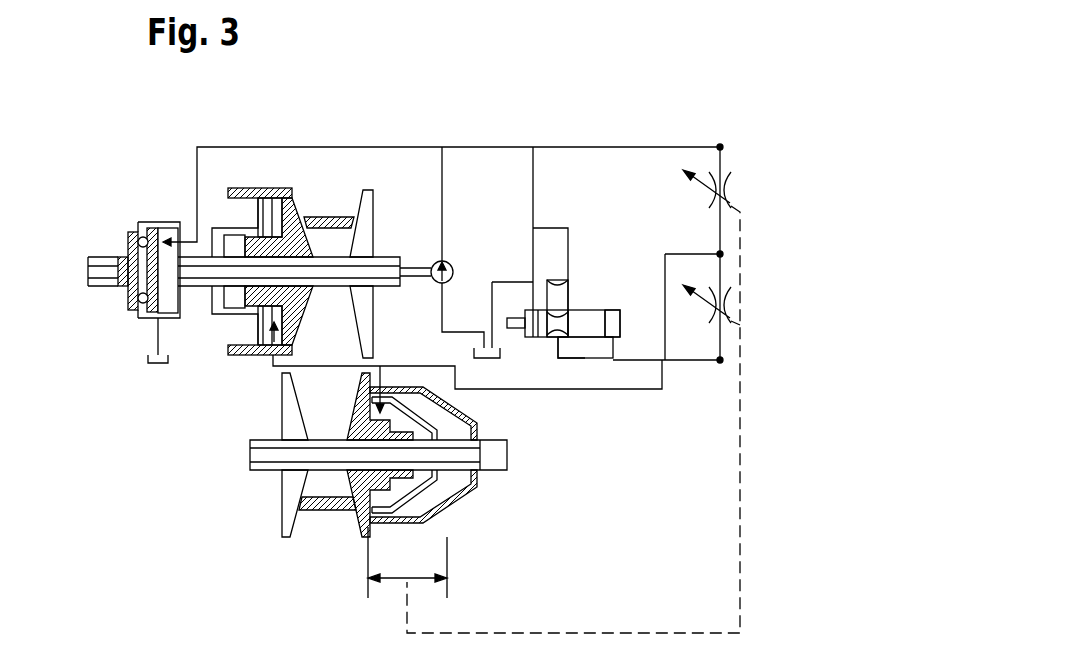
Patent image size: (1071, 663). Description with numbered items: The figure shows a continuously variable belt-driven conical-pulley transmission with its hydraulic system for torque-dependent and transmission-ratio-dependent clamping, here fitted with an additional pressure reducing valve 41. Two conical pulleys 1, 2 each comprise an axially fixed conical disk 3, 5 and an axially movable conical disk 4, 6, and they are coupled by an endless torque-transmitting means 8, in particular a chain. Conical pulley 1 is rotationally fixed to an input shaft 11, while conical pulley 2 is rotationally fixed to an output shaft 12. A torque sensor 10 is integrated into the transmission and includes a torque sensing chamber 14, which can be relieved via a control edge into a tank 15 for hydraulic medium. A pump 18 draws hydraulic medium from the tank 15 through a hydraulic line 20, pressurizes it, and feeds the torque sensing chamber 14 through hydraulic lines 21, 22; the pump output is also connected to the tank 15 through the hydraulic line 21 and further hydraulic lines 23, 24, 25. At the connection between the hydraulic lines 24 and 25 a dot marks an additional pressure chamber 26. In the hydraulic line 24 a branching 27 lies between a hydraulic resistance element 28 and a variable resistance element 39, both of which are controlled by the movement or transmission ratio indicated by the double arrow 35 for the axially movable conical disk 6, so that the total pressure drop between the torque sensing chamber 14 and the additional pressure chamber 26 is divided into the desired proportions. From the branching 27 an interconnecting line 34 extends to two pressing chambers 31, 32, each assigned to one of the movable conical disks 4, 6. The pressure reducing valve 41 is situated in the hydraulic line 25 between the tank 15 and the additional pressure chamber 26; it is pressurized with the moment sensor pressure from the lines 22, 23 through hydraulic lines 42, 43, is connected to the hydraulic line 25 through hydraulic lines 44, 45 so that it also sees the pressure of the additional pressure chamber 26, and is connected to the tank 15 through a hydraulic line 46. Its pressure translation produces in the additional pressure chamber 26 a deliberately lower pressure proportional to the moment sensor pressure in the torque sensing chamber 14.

The conical pulley 1 is at (318, 272).
The conical pulley 2 is at (365, 484).
The axially fixed conical disk 3 is at (368, 212).
The axially movable conical disk 4 is at (296, 198).
The axially fixed conical disk 5 is at (285, 492).
The axially movable conical disk 6 is at (355, 511).
The endless torque-transmitting means 8 is at (323, 511).
The torque sensor 10 is at (160, 252).
The input shaft 11 is at (110, 286).
The output shaft 12 is at (497, 470).
The torque sensing chamber 14 is at (164, 302).
The tank 15 is at (153, 365).
The pump 18 is at (432, 287).
The hydraulic line 20 is at (442, 322).
The hydraulic line 21 is at (443, 192).
The hydraulic line 22 is at (328, 147).
The hydraulic line 23 is at (595, 147).
The hydraulic line 24 is at (720, 228).
The hydraulic line 25 is at (688, 362).
The additional pressure chamber 26 is at (722, 360).
The branching 27 is at (722, 254).
The hydraulic resistance element 28 is at (733, 183).
The pressing chamber 31 is at (232, 298).
The pressing chamber 32 is at (377, 421).
The interconnecting line 34 is at (598, 360).
The double arrow 35 is at (415, 577).
The variable resistance element 39 is at (733, 300).
The pressure reducing valve 41 is at (608, 300).
The hydraulic line 42 is at (533, 252).
The hydraulic line 43 is at (568, 233).
The hydraulic line 44 is at (614, 342).
The hydraulic line 45 is at (571, 360).
The hydraulic line 46 is at (568, 278).